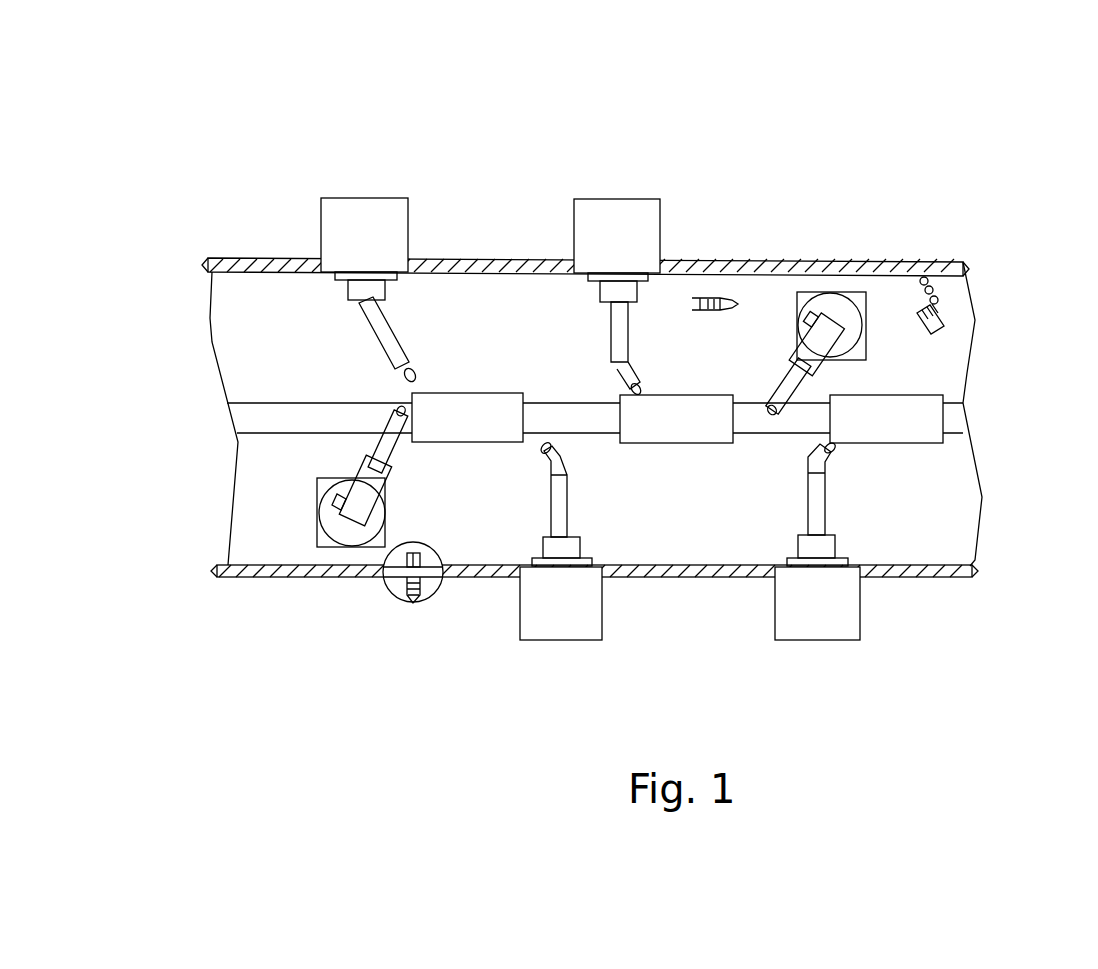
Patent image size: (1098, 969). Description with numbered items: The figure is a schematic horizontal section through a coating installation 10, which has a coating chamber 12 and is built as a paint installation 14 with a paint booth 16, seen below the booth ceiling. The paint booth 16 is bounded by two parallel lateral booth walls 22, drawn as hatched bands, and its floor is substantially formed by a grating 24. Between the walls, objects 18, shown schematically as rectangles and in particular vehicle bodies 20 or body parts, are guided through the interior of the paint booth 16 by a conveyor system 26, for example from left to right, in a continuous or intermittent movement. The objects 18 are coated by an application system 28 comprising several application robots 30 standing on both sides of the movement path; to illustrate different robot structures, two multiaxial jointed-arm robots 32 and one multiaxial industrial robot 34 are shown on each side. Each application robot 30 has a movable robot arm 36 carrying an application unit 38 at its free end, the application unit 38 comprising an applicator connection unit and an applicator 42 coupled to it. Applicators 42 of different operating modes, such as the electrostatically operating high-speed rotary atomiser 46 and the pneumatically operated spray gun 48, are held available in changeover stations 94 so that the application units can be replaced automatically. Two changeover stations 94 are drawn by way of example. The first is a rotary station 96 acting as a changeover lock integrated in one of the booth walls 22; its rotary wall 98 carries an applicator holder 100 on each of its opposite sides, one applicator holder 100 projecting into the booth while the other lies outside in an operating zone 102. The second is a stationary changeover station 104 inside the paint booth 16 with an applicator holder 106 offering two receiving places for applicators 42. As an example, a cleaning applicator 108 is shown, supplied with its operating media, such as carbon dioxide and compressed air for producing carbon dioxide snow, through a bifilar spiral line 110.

The coating installation 10 is at (887, 112).
The upper wall of housing 12 is at (473, 247).
The paint installation 14 is at (958, 212).
The paint booth 16 is at (787, 257).
The objects 18 is at (482, 400).
The vehicle bodies 20 is at (515, 395).
The booth walls 22 is at (549, 259).
The grating 24 is at (956, 537).
The conveyor system 26 is at (962, 385).
The application system 28 is at (329, 358).
The application robots 30 is at (345, 288).
The multiaxial jointed-arm robots 32 is at (362, 282).
The multiaxial industrial robot 34 is at (818, 302).
The robot arm 36 is at (378, 322).
The application unit 38 is at (384, 365).
The applicator 42 is at (954, 313).
The high-speed rotary atomiser 46 is at (412, 375).
The spray gun 48 is at (413, 443).
The changeover stations 94 is at (698, 283).
The rotary station 96 is at (432, 593).
The rotary wall 98 is at (389, 578).
The applicator holder 100 is at (437, 557).
The operating zone 102 is at (400, 628).
The stationary changeover station 104 is at (722, 293).
The applicator holder 106 is at (716, 315).
The cleaning applicator 108 is at (945, 337).
The spiral line 110 is at (948, 288).